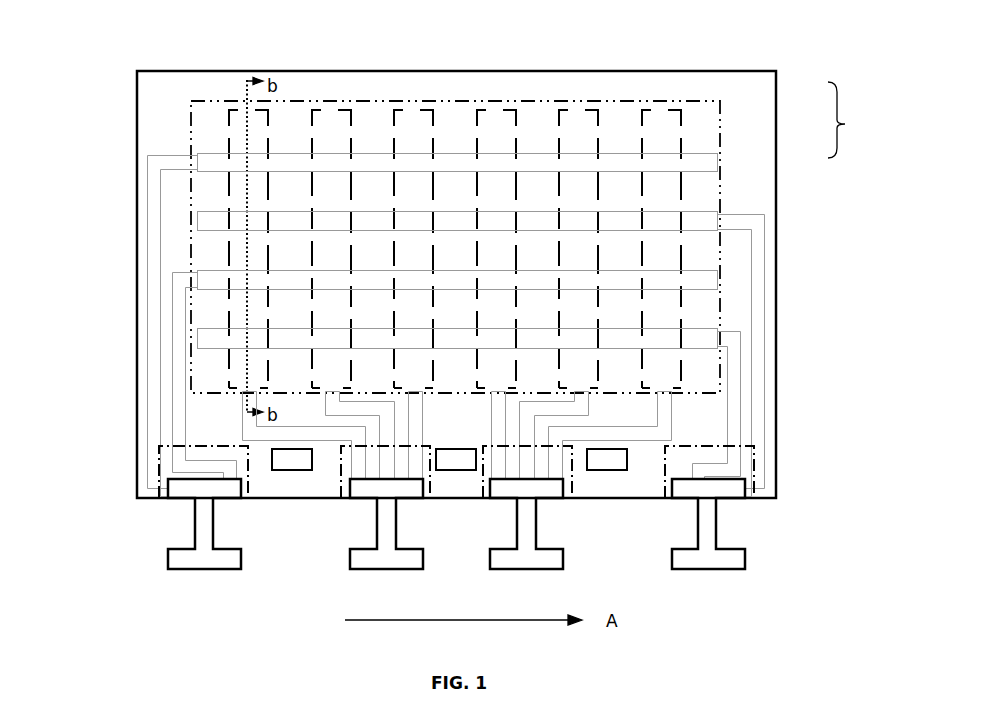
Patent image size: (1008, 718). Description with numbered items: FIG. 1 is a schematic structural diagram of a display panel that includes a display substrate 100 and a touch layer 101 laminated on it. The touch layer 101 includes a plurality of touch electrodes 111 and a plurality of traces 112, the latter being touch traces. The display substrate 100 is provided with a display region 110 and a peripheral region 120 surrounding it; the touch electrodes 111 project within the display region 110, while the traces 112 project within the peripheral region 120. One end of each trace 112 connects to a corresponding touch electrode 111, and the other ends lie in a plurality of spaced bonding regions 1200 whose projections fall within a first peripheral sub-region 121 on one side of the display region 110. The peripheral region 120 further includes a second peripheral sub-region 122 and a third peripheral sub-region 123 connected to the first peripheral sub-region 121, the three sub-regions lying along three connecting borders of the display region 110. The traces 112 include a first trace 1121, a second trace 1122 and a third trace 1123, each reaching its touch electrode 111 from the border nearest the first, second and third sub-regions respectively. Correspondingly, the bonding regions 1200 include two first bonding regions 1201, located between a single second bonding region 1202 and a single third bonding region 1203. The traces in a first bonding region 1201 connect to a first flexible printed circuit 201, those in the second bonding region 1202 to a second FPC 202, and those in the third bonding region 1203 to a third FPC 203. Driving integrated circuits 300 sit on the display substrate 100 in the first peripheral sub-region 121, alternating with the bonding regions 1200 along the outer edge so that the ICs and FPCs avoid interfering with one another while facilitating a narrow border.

The display substrate 100 is at (766, 72).
The touch layer 101 is at (857, 120).
The display region 110 is at (350, 101).
The touch electrodes 111 is at (576, 106).
The traces 112 is at (764, 215).
The peripheral region 120 is at (483, 83).
The first peripheral sub-region 121 is at (319, 502).
The second peripheral sub-region 122 is at (139, 128).
The third peripheral sub-region 123 is at (784, 410).
The first trace 1121 is at (644, 454).
The second trace 1122 is at (143, 200).
The third trace 1123 is at (770, 283).
The bonding regions 1200 is at (577, 492).
The first bonding region 1201 is at (432, 492).
The second bonding region 1202 is at (252, 492).
The third bonding region 1203 is at (758, 492).
The first flexible printed circuit 201 is at (380, 549).
The second FPC 202 is at (200, 549).
The third FPC 203 is at (702, 550).
The driving integrated circuit 300 is at (290, 462).